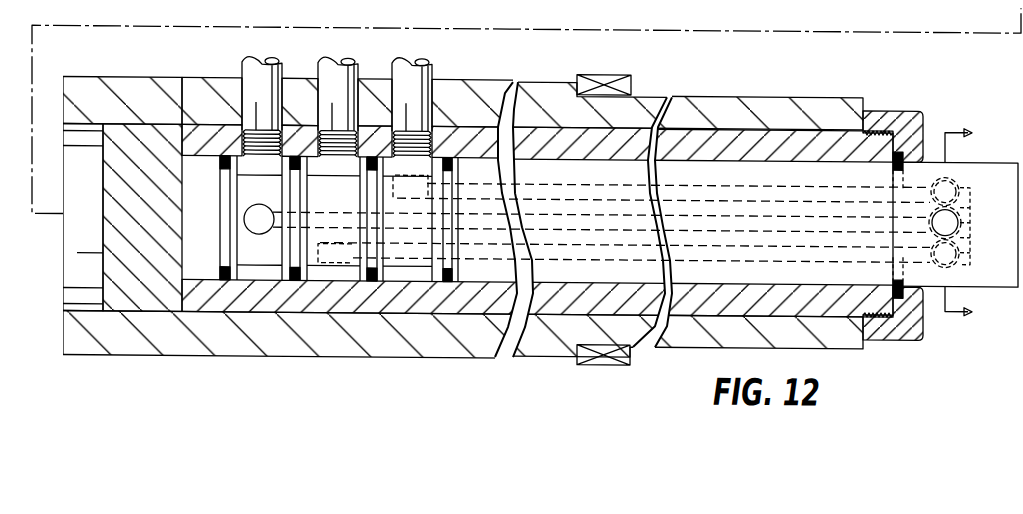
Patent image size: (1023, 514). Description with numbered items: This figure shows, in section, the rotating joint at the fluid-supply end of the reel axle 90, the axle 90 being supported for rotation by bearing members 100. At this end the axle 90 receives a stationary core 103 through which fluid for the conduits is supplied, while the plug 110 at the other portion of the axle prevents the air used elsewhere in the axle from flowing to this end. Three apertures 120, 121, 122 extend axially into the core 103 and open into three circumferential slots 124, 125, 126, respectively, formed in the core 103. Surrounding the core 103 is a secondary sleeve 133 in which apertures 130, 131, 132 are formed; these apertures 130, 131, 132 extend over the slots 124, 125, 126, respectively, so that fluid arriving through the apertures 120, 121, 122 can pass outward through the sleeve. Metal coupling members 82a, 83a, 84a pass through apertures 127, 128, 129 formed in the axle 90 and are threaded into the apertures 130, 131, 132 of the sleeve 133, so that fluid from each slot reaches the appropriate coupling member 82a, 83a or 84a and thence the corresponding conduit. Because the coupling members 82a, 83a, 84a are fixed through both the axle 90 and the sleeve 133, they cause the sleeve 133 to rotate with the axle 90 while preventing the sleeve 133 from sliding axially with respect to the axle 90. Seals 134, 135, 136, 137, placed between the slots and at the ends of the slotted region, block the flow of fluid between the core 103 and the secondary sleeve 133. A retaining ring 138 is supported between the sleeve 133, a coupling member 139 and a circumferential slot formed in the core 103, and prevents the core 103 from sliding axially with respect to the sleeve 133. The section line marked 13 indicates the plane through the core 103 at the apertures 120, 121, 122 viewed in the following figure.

The section line 13- 13 is at (975, 225).
The coupling member 82a is at (264, 57).
The coupling member 83a is at (344, 57).
The coupling member 84a is at (417, 57).
The axle 90 is at (722, 91).
The bearing members 100 is at (607, 70).
The stationary core 103 is at (952, 161).
The plug 110 is at (103, 196).
The aperture 120 is at (979, 200).
The aperture 121 is at (980, 228).
The aperture 122 is at (968, 180).
The circumferential slot 124 is at (272, 266).
The circumferential slot 125 is at (352, 270).
The circumferential slot 126 is at (427, 272).
The aperture 127 is at (240, 78).
The aperture 128 is at (315, 78).
The aperture 129 is at (441, 79).
The aperture 130 is at (258, 153).
The aperture 131 is at (345, 157).
The aperture 132 is at (425, 157).
The secondary sleeve 133 is at (790, 156).
The seal 134 is at (225, 278).
The seal 135 is at (294, 278).
The seal 136 is at (375, 278).
The seal 137 is at (448, 278).
The retaining ring 138 is at (894, 277).
The coupling member 139 is at (893, 333).